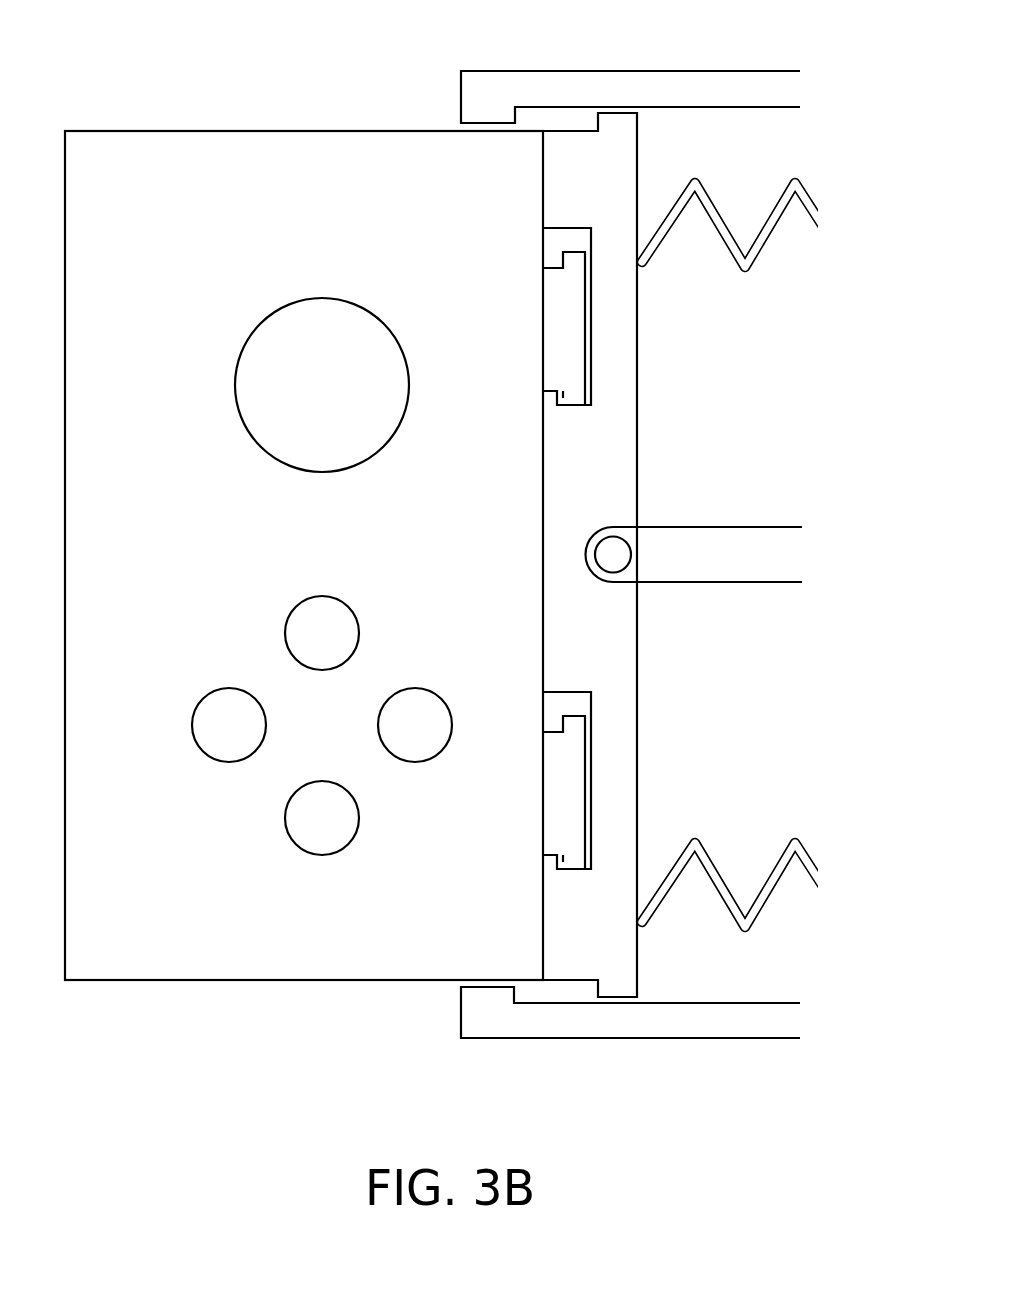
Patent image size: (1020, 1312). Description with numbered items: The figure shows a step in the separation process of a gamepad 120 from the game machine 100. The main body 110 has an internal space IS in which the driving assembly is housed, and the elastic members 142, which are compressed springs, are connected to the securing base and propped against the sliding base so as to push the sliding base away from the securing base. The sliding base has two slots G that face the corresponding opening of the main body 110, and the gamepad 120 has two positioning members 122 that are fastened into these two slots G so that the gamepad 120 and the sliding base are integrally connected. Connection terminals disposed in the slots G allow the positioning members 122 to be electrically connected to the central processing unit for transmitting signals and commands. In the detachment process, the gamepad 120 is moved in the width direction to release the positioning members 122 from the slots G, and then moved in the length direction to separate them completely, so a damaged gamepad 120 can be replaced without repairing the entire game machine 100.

The game machine 100 is at (858, 1107).
The main body 110 is at (703, 1022).
The gamepad 120 is at (231, 928).
The positioning member 122 is at (584, 281).
The elastic member 142 is at (716, 218).
The slot G is at (559, 238).
The internal space IS is at (745, 390).